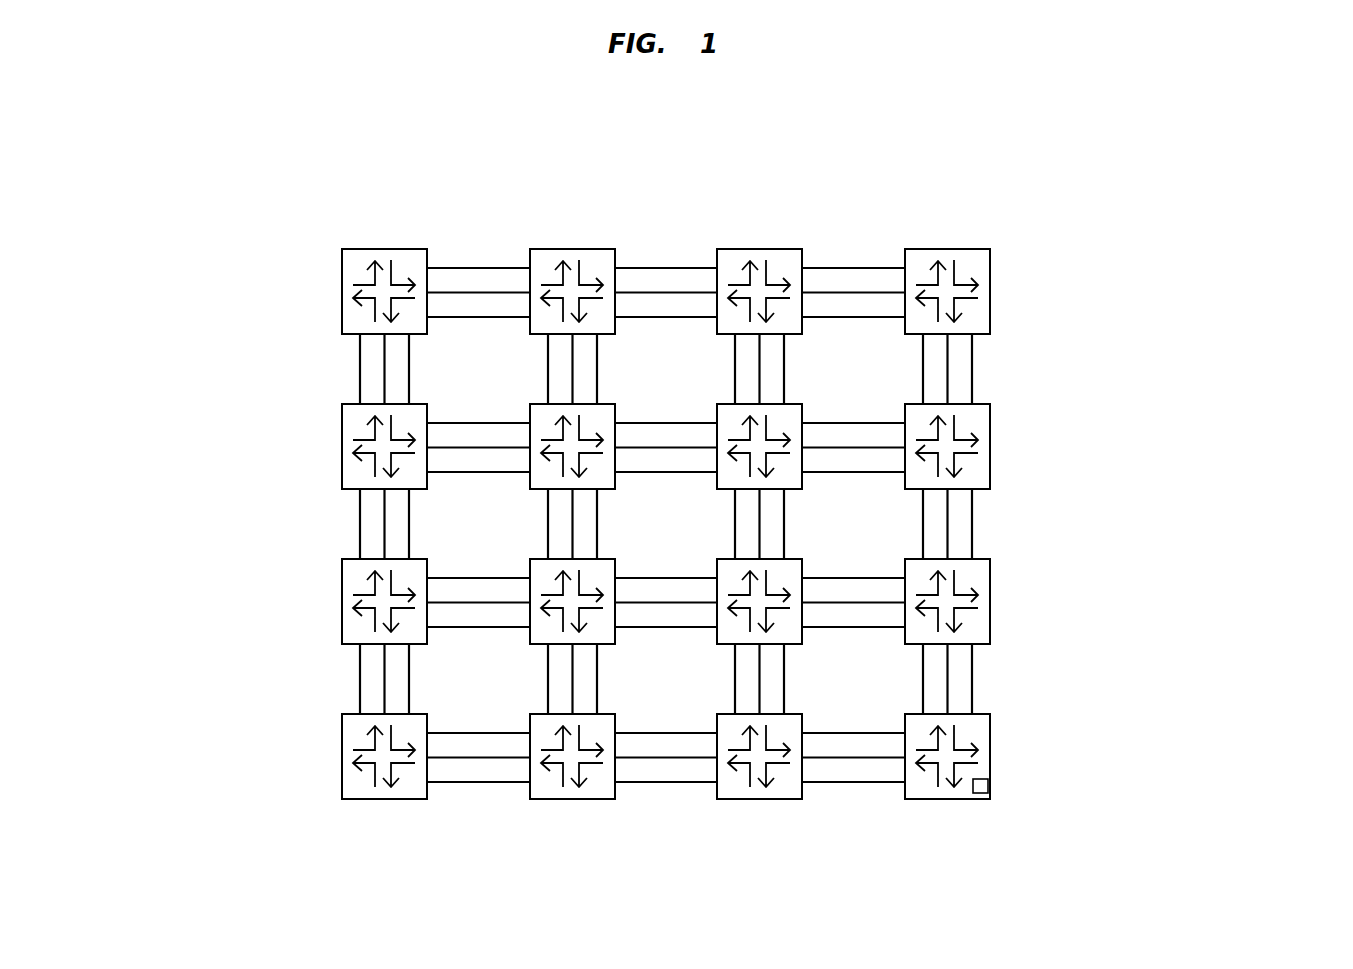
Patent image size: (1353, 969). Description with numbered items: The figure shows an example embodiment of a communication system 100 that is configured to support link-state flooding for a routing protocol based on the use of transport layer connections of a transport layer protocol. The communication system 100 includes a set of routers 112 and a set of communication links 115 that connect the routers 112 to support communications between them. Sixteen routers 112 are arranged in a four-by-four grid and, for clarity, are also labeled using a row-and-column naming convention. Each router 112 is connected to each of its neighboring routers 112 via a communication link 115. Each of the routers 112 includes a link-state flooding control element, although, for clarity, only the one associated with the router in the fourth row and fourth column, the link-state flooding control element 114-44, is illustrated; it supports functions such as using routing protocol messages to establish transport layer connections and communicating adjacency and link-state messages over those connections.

The communication system 100 is at (1157, 237).
The routers 112 is at (343, 458).
The communication links 115 is at (482, 782).
The link-state flooding control element 114-44 is at (990, 786).